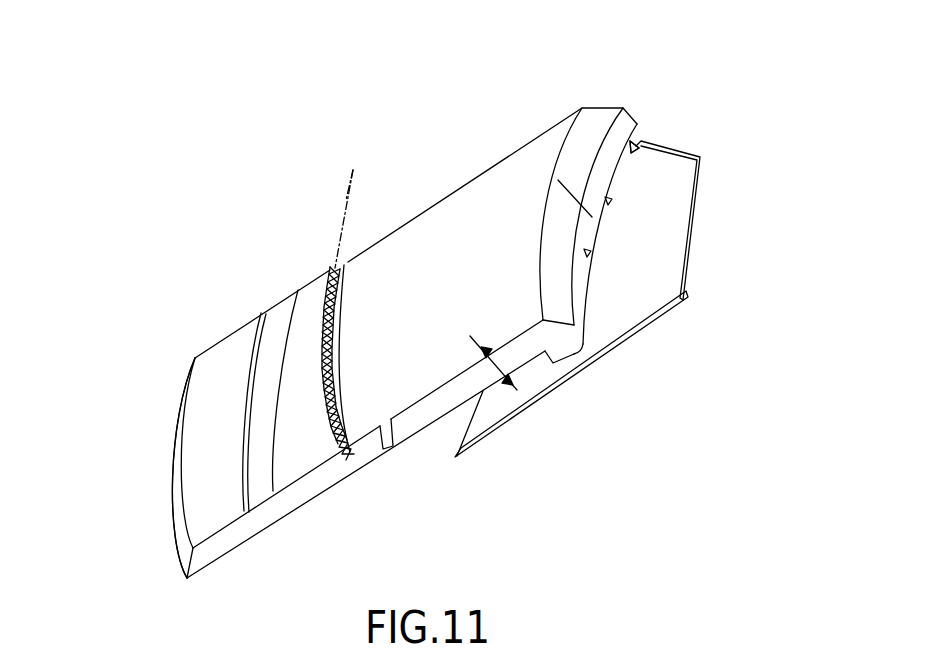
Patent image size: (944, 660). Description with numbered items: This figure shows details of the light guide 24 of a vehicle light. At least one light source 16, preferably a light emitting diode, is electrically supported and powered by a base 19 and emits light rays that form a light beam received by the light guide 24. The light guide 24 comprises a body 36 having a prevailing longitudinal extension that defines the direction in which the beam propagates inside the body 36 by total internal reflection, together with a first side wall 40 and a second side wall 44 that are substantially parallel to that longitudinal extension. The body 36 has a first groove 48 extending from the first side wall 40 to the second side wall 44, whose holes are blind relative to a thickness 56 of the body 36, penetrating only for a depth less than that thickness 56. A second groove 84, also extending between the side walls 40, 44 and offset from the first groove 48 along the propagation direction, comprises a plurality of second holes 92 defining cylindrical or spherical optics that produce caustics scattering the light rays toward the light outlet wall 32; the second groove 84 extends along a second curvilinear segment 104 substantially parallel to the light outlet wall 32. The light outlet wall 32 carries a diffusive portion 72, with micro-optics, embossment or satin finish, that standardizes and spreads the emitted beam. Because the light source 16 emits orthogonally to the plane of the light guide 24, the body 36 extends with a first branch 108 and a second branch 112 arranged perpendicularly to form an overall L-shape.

The light source 16 is at (637, 148).
The base 19 is at (688, 164).
The light guide 24 is at (345, 160).
The light outlet wall 32 is at (176, 478).
The diffusive portion 72 is at (183, 468).
The body 36 is at (412, 257).
The first side wall 40 is at (499, 151).
The second side wall 44 is at (434, 423).
The first groove 48 is at (393, 458).
The thickness 56 is at (501, 398).
The second groove 84 is at (323, 350).
The second holes 92 is at (327, 406).
The second curvilinear segment 104 is at (346, 184).
The first branch 108 is at (566, 350).
The second branch 112 is at (457, 394).